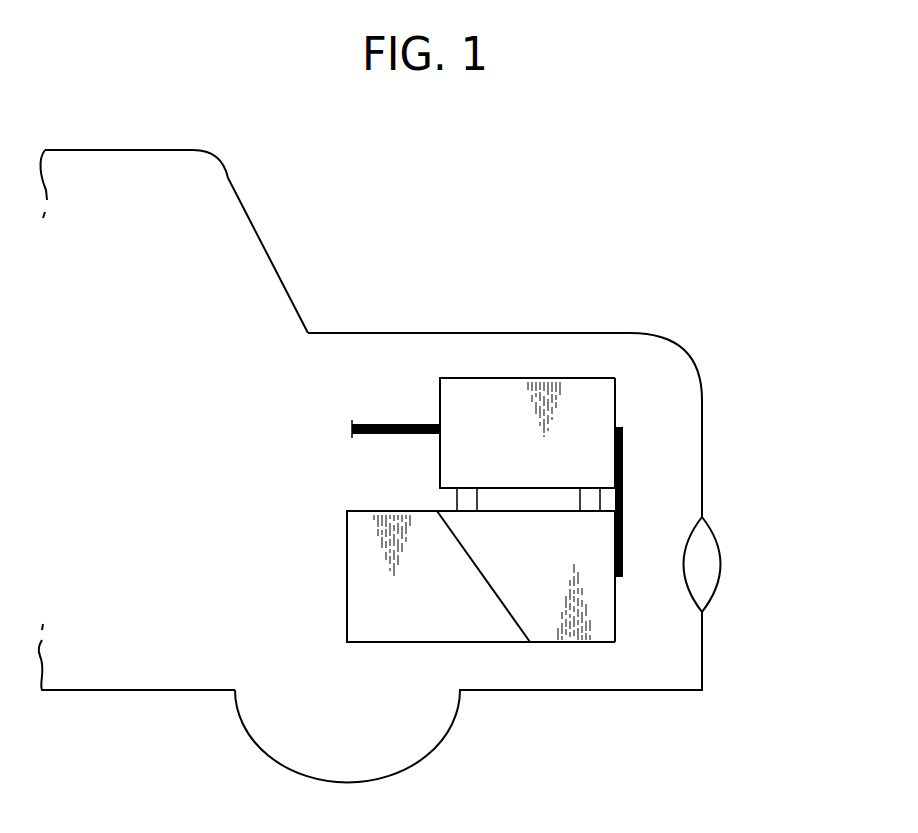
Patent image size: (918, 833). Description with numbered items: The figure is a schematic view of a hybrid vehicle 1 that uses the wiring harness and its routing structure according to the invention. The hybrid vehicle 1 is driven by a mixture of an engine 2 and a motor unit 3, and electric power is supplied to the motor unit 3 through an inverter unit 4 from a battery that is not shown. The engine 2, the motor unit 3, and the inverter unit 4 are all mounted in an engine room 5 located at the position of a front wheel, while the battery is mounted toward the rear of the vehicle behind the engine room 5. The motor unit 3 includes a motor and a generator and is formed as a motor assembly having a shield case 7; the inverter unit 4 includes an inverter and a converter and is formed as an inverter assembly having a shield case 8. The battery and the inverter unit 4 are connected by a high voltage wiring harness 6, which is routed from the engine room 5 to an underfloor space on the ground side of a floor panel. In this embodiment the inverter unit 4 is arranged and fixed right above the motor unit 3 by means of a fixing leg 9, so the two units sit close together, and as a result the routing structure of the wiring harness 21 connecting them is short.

The hybrid vehicle 1 is at (564, 217).
The engine 2 is at (355, 582).
The motor unit 3 is at (557, 642).
The inverter unit 4 is at (480, 398).
The engine room 5 is at (658, 352).
The high voltage wiring harness 6 is at (405, 422).
The shield case 7 is at (593, 560).
The shield case 8 is at (598, 388).
The fixing leg 9 is at (457, 505).
The wiring harness 21 is at (625, 450).